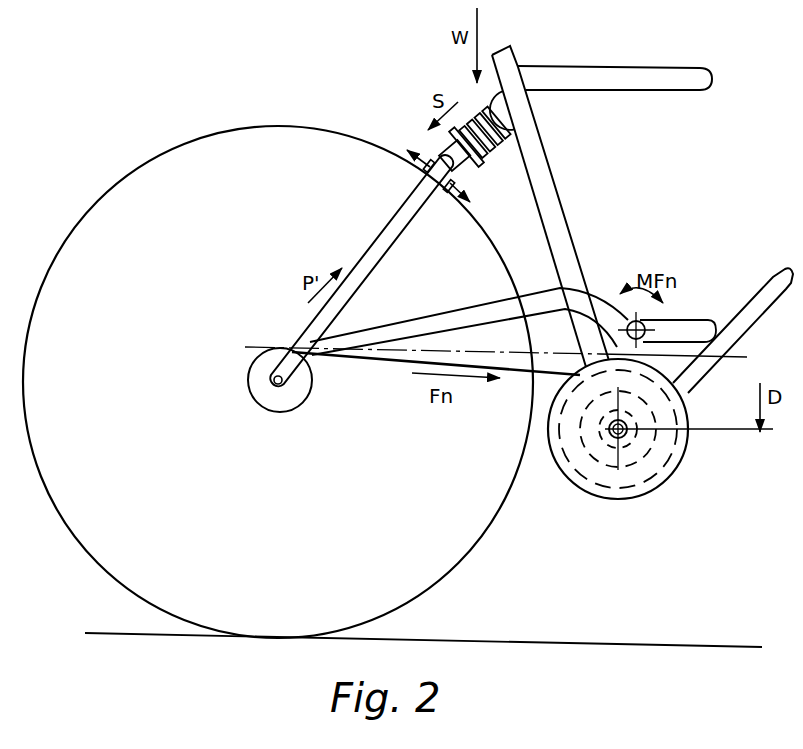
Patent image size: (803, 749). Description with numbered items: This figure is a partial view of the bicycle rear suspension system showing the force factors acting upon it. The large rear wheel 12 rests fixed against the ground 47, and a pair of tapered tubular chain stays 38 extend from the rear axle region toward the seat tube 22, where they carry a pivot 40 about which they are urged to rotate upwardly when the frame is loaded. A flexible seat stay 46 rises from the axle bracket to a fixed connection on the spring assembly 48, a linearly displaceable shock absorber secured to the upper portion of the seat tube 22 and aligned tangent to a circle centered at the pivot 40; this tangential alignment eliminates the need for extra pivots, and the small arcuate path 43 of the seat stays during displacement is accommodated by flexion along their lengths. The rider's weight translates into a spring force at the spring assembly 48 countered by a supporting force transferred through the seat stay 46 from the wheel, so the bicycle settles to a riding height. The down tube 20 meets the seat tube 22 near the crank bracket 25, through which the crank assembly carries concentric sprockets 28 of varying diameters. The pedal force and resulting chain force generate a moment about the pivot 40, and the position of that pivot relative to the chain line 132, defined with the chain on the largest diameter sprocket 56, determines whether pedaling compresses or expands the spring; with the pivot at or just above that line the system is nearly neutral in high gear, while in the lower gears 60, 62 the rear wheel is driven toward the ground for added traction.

The rear wheel 12 is at (112, 185).
The down tube 20 is at (775, 277).
The seat tube 22 is at (565, 206).
The crank bracket 25 is at (605, 440).
The sprockets 28 is at (657, 448).
The chain stays 38 is at (482, 300).
The pivot 40 is at (660, 322).
The arcuate path 43 is at (425, 171).
The seat stay 46 is at (387, 247).
The ground 47 is at (519, 640).
The spring assembly 48 is at (504, 153).
The largest diameter sprocket 56 is at (667, 480).
The lower gear 60 is at (637, 460).
The lower gear 62 is at (600, 487).
The chain line 132 is at (721, 357).